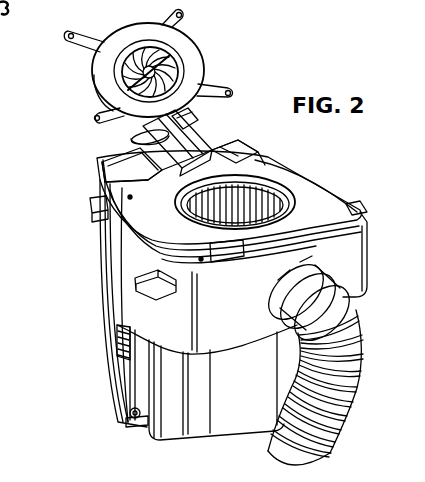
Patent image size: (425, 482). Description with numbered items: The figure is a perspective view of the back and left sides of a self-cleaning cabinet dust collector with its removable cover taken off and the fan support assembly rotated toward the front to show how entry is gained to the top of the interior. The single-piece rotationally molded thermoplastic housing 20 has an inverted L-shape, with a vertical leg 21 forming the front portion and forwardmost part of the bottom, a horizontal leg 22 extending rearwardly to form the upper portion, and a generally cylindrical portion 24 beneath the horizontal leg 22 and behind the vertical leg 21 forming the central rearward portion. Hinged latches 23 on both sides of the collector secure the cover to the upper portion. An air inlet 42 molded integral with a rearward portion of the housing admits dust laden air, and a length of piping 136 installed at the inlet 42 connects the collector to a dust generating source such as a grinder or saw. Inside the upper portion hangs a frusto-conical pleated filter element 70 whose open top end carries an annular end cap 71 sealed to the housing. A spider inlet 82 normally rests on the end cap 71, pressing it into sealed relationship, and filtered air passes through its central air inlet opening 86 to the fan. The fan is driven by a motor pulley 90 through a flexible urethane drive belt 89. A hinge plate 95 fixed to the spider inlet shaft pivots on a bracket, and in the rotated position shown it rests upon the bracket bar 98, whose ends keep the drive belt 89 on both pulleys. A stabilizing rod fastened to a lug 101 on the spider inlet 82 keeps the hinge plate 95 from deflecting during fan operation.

The housing 20 is at (97, 253).
The vertical leg 21 is at (104, 363).
The horizontal leg 22 is at (367, 256).
The hinged latches 23 is at (90, 205).
The cylindrical portion 24 is at (180, 413).
The air inlet 42 is at (278, 298).
The filter element 70 is at (200, 197).
The annular end cap 71 is at (300, 192).
The spider inlet 82 is at (94, 75).
The air inlet opening 86 is at (155, 70).
The drive belt 89 is at (198, 142).
The motor pulley 90 is at (150, 140).
The hinge plate 95 is at (132, 135).
The bar or pin 98 is at (126, 160).
The lug 101 is at (188, 122).
The piping 136 is at (341, 410).